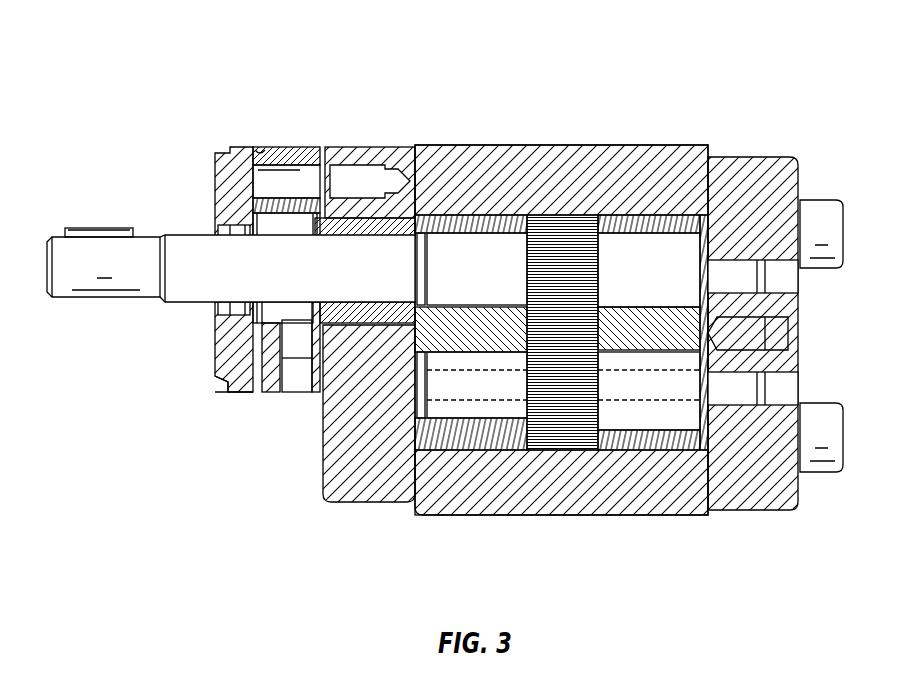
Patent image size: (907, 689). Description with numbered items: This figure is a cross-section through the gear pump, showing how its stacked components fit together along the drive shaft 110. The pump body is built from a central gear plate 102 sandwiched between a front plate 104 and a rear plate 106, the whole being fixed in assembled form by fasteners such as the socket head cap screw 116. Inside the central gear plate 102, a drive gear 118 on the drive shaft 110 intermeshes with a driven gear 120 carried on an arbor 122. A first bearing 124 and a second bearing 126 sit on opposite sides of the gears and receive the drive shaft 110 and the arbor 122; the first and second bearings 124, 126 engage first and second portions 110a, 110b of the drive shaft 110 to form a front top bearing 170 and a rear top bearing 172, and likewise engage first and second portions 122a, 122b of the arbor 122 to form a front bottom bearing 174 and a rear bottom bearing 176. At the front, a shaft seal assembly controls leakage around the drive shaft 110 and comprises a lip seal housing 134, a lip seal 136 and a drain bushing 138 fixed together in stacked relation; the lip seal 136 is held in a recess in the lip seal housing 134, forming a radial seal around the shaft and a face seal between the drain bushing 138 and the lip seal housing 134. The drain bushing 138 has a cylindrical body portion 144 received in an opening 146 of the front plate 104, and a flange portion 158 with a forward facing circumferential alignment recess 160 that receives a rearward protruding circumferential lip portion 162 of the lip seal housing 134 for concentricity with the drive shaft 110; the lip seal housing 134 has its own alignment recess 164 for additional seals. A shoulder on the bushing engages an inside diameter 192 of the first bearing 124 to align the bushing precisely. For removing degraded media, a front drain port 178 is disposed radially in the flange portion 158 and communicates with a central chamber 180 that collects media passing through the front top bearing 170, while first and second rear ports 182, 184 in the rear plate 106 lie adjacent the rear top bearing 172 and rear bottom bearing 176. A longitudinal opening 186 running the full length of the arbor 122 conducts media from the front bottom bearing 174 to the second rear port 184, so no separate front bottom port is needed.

The central gear plate 102 is at (527, 143).
The front plate 104 is at (393, 144).
The rear plate 106 is at (767, 155).
The drive shaft 110 is at (65, 301).
The first portion of the drive shaft 110a is at (456, 286).
The second portion of the drive shaft 110b is at (635, 286).
The fastener 116 is at (843, 245).
The drive gear 118 is at (585, 213).
The driven gear 120 is at (607, 335).
The arbor 122 is at (682, 434).
The first portion of the arbor 122a is at (455, 399).
The second portion of the arbor 122b is at (633, 399).
The first bearing 124 is at (478, 454).
The second bearing 126 is at (618, 452).
The lip seal housing 134 is at (240, 395).
The lip seal 136 is at (232, 218).
The drain bushing 138 is at (294, 144).
The cylindrical body portion 144 is at (400, 222).
The opening 146 is at (366, 325).
The flange portion 158 is at (318, 150).
The alignment recess 160 is at (272, 152).
The circumferential lip portion 162 is at (258, 148).
The alignment recess 164 is at (225, 385).
The front top bearing 170 is at (482, 228).
The rear top bearing 172 is at (671, 228).
The front bottom bearing 174 is at (445, 420).
The rear bottom bearing 176 is at (657, 433).
The front drain port 178 is at (298, 378).
The central chamber 180 is at (272, 315).
The first rear port 182 is at (788, 282).
The second rear port 184 is at (785, 387).
The longitudinal opening 186 is at (609, 387).
The inside diameter 192 is at (415, 312).